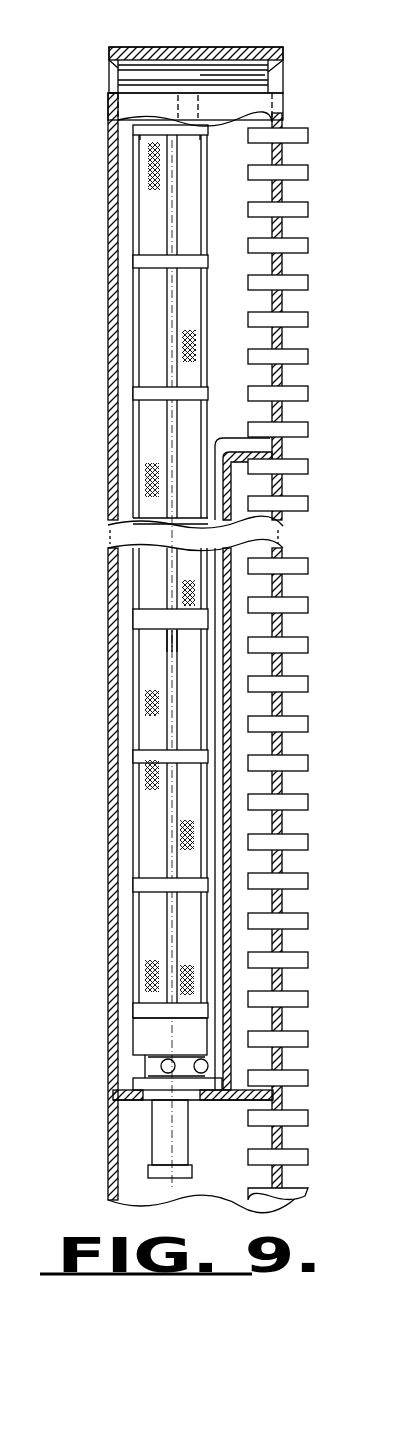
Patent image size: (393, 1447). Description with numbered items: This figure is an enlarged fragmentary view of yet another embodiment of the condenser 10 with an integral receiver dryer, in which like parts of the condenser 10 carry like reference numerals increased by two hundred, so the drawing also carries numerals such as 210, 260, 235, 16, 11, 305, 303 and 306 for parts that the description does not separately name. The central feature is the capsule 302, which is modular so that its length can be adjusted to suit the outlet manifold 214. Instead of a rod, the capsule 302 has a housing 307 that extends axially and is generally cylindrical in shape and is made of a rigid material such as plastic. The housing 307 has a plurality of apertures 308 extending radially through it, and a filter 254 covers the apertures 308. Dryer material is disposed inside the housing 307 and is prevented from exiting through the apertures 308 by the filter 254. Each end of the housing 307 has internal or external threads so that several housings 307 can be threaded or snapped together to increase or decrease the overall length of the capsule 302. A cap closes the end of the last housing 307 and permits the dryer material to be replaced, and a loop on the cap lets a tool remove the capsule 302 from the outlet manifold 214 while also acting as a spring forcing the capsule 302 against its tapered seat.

The cold head assembly 210 is at (82, 84).
The end cap 260 is at (275, 53).
The outlet manifold 214 is at (106, 200).
The housing wall section 235 is at (124, 323).
The capsule 302 is at (132, 365).
The heat exchanger fins 16 is at (311, 173).
The condenser 10 is at (237, 595).
The filter 254 is at (185, 703).
The apertures 308 is at (180, 708).
The housing 307 is at (165, 921).
The section line 11- 11 is at (237, 1010).
The seal ring 305 is at (162, 1068).
The end plate 303 is at (140, 1084).
The base plate and stem 306 is at (150, 1098).